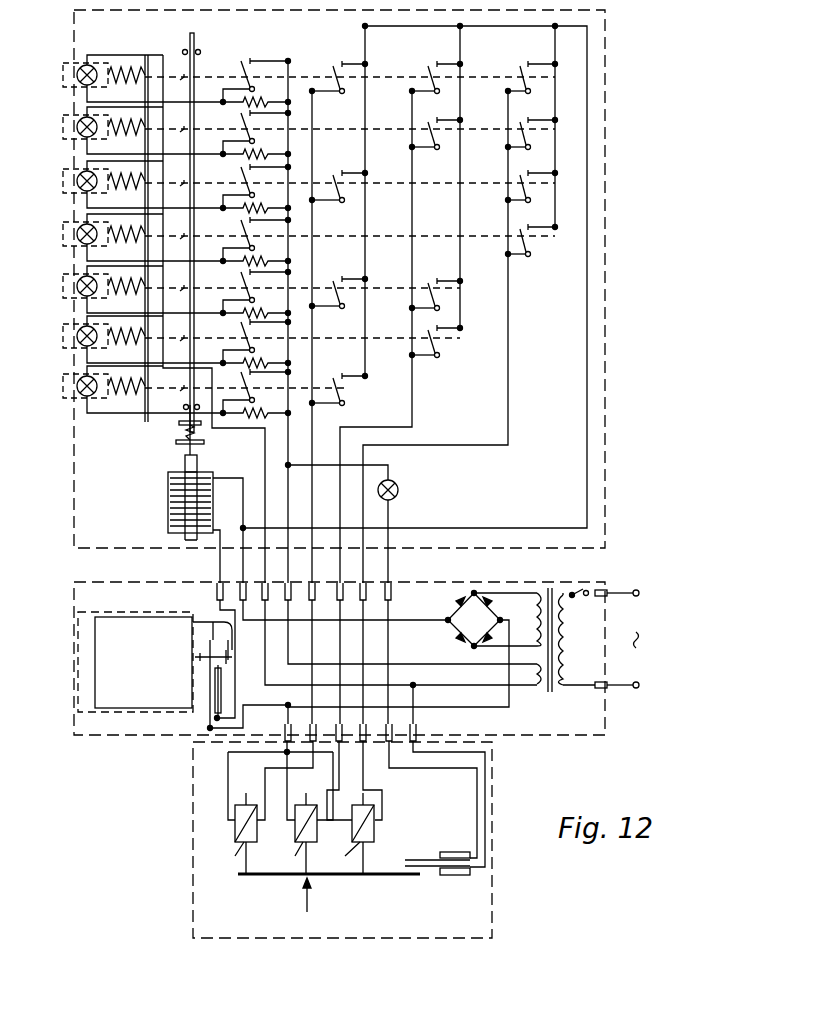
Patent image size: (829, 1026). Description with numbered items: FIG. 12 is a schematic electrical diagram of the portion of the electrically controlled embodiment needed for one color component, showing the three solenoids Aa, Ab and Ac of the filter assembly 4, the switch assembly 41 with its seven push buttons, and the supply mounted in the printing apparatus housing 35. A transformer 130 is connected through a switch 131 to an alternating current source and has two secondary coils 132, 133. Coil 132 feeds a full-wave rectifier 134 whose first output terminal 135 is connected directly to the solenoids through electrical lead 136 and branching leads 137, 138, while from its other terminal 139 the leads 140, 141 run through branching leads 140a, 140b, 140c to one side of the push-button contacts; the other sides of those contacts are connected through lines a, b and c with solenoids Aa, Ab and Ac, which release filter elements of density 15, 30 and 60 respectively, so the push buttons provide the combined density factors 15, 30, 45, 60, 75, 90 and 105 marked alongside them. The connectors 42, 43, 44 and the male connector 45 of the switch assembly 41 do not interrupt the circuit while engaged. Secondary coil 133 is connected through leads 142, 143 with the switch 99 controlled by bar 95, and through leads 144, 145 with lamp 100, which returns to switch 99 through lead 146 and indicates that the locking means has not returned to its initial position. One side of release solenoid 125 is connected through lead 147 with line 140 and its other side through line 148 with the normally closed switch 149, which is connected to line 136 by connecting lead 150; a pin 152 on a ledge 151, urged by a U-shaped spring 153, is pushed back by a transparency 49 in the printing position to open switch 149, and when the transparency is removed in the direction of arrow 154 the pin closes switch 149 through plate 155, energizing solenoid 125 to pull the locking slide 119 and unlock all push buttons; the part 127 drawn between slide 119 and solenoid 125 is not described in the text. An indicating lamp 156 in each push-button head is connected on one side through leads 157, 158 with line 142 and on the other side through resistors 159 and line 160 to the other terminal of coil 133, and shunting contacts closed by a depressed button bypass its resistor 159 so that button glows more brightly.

The filter density factor 105 is at (64, 74).
The filter density factor 90 is at (64, 126).
The filter density factor 75 is at (64, 180).
The filter density factor 60 is at (64, 233).
The filter density factor 45 is at (64, 285).
The filter density factor 30 is at (64, 335).
The filter density factor 15 is at (64, 385).
The lead 157 is at (163, 45).
The locking slide 119 is at (196, 60).
The indicating lamp 156 is at (82, 398).
The spring 127 is at (182, 430).
The resistor 159 is at (250, 418).
The lead 147 is at (233, 476).
The lead 158 is at (265, 470).
The line 160 is at (303, 322).
The release solenoid 125 is at (168, 496).
The lead 145 is at (388, 468).
The lamp 100 is at (398, 490).
The lead 141 is at (587, 462).
The branching lead 140a is at (365, 272).
The branching lead 140b is at (466, 222).
The branching lead 140c is at (555, 152).
The switch assembly 41 is at (604, 254).
The line 148 is at (313, 583).
The female electrical connector 44 is at (392, 588).
The full-wave rectifier 134 is at (412, 632).
The switch 131 is at (588, 588).
The rectifier terminal 139 is at (412, 648).
The first output terminal 135 is at (448, 618).
The secondary coil 132 is at (529, 619).
The secondary coil 133 is at (529, 674).
The transformer 130 is at (556, 627).
The lead 140 is at (345, 623).
The lead 144 is at (436, 668).
The lead 142 is at (452, 688).
The electrical lead 136 is at (509, 708).
The male electrical connector 42 is at (381, 670).
The female electrical connector 43 is at (416, 741).
The printing apparatus housing 35 is at (600, 725).
The U-shaped spring 153 is at (195, 625).
The pin 152 is at (197, 656).
The ledge 151 is at (205, 670).
The plate 155 is at (230, 650).
The switch 149 is at (222, 696).
The connecting lead 150 is at (283, 706).
The arrow 154 is at (64, 661).
The transparency 49 is at (100, 698).
The branching lead 137 is at (229, 770).
The lead 143 is at (488, 772).
The lead 146 is at (437, 768).
The branching lead 138 is at (292, 833).
The bar 95 is at (329, 893).
The switch 99 is at (418, 868).
The filter assembly 4 is at (485, 893).